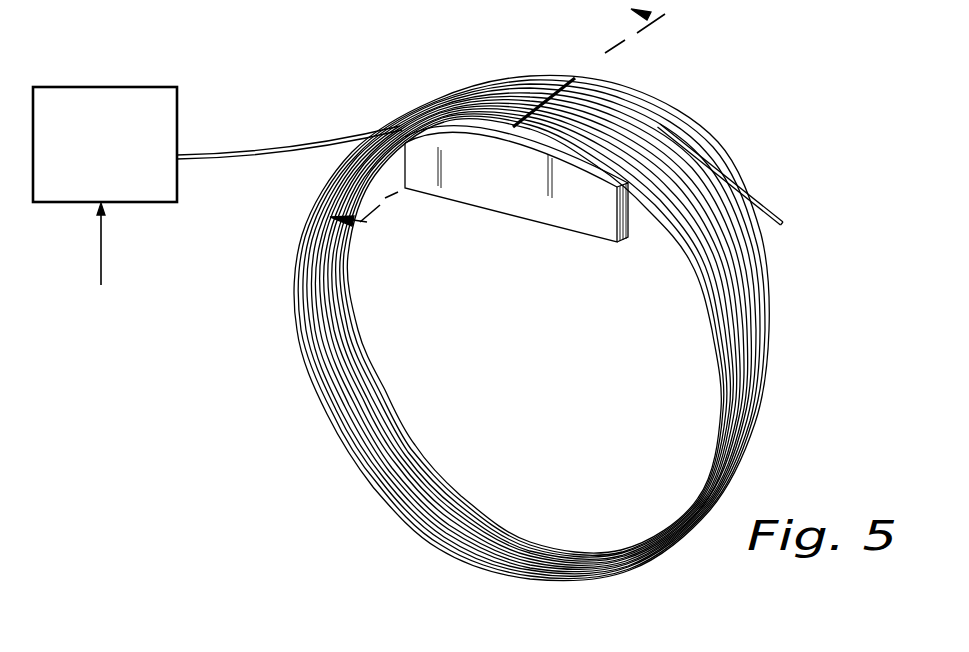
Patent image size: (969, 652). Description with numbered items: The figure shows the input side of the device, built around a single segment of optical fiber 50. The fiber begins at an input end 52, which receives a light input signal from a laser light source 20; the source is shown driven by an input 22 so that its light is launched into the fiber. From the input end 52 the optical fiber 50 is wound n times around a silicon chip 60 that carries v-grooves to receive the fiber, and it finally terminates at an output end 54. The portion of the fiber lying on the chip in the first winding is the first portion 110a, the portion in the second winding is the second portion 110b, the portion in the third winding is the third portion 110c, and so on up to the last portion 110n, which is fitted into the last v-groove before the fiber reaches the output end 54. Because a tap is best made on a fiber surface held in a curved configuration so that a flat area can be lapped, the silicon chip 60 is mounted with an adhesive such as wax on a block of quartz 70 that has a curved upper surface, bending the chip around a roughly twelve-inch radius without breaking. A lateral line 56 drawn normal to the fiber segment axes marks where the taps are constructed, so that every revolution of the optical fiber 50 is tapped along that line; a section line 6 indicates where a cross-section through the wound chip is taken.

The laser light source 20 is at (111, 87).
The input to laser light source 22 is at (102, 243).
The optical fiber 50 is at (531, 320).
The input end 52 is at (203, 153).
The output end 54 is at (757, 193).
The lateral line 56 is at (560, 83).
The silicon chip 60 is at (447, 128).
The quartz block 70 is at (463, 196).
The portion of the fiber at the first winding 110a is at (517, 128).
The portion of the fiber at the second winding 110b is at (576, 140).
The portion of the fiber at the third winding 110c is at (677, 233).
The portion of the fiber at the nth winding 110n is at (653, 110).
The section line 6- 6 is at (509, 130).